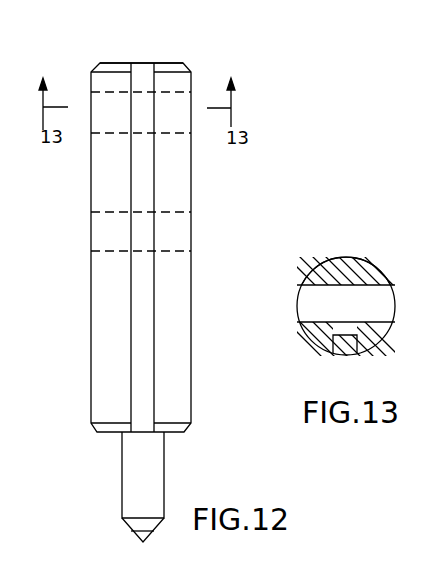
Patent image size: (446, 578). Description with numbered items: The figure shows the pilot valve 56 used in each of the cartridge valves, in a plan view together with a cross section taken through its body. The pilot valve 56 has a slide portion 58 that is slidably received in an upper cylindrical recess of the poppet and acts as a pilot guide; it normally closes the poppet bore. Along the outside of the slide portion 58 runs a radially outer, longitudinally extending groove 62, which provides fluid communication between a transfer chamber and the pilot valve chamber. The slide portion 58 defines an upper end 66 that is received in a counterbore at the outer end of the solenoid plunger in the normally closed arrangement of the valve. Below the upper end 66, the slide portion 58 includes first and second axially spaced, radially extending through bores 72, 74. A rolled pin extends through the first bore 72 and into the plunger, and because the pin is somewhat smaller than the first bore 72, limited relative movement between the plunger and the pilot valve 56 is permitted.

In FIG. 12, the pilot valve 56 is at (153, 484).
In FIG. 12, the slide portion 58 is at (183, 222).
In FIG. 13, the slide portion 58 is at (378, 270).
In FIG. 12, the groove 62 is at (155, 76).
In FIG. 13, the groove 62 is at (345, 344).
In FIG. 12, the upper end 66 is at (182, 80).
In FIG. 12, the first through bore 72 is at (167, 133).
In FIG. 13, the first through bore 72 is at (377, 322).
In FIG. 12, the second through bore 74 is at (175, 250).